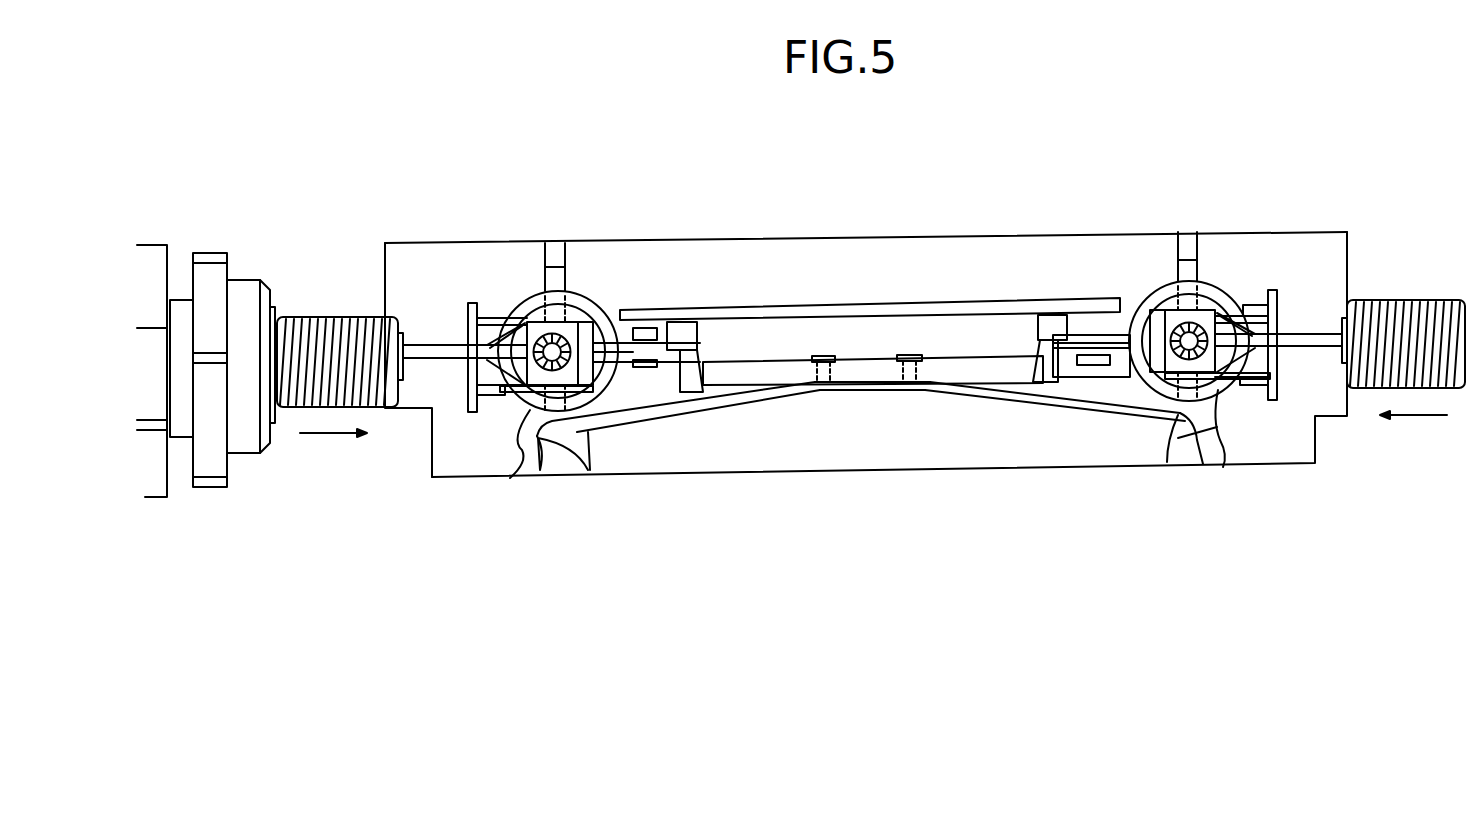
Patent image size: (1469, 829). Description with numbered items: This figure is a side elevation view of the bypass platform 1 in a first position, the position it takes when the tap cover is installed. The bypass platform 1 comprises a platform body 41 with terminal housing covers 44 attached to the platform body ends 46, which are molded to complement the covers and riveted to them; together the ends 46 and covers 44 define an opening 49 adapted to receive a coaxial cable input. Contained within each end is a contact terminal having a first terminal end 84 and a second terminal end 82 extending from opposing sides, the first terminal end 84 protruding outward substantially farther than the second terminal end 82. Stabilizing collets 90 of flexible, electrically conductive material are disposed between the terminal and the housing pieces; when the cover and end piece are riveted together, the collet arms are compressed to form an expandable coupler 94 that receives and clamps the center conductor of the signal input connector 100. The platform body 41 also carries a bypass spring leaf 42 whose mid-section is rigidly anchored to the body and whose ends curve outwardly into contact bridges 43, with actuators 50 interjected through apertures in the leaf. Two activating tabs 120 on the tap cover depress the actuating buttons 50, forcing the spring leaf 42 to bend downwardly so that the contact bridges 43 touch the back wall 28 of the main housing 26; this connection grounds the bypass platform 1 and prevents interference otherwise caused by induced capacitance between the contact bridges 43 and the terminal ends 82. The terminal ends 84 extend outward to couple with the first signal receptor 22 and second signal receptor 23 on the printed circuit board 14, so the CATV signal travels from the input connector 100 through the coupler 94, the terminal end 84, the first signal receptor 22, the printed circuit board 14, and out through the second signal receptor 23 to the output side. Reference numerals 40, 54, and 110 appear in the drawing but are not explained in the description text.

The bypass platform 1 is at (720, 228).
The printed circuit board 14 is at (938, 302).
The first signal receptor 22 is at (552, 243).
The second signal receptor 23 is at (1186, 232).
The main housing 26 is at (410, 243).
The back wall 28 is at (1300, 465).
The spring plate 40 is at (861, 421).
The platform body 41 is at (962, 392).
The bypass spring leaf 42 is at (682, 415).
The contact bridges 43 is at (583, 455).
The terminal housing covers 44 is at (598, 308).
The platform body ends 46 is at (493, 400).
The opening 49 is at (465, 388).
The actuators 50 is at (705, 362).
The tab 54 is at (825, 357).
The second terminal end 82 is at (510, 478).
The first terminal end 84 is at (565, 268).
The stabilizing collets 90 is at (500, 318).
The coupler 94 is at (478, 340).
The signal input connector 100 is at (305, 315).
The rod 110 is at (412, 344).
The activating tabs 120 is at (700, 332).